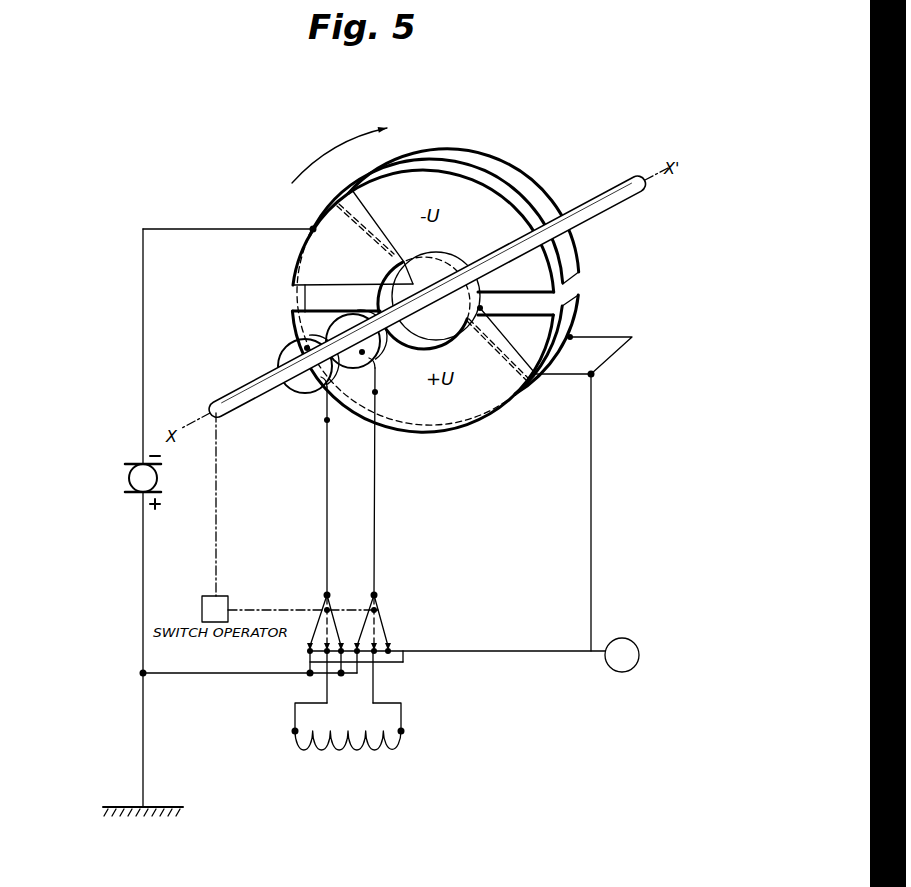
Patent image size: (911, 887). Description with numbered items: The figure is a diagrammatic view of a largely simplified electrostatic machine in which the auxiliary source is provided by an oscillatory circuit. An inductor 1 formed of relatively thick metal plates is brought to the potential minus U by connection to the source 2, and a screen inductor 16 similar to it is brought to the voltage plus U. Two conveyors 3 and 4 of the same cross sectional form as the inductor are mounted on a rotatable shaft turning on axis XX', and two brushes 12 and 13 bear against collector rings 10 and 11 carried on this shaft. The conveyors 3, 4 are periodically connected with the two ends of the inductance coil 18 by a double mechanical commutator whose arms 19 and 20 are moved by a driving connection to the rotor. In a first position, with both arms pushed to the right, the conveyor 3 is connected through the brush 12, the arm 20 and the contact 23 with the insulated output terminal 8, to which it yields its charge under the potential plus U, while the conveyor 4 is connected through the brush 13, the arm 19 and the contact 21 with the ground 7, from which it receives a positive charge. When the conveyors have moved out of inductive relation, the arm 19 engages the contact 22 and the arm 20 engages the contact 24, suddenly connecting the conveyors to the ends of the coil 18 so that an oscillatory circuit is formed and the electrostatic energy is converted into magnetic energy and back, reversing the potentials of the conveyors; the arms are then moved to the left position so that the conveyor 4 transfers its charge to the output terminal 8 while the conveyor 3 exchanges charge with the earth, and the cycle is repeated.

The inductor 1 is at (577, 257).
The source 2 is at (128, 481).
The conveyor 3 is at (567, 327).
The conveyor 4 is at (305, 298).
The ground 7 is at (143, 807).
The insulated output terminal 8 is at (637, 655).
The collector ring 10 is at (335, 325).
The collector ring 11 is at (280, 357).
The brush 12 is at (376, 394).
The brush 13 is at (327, 421).
The screen inductor 16 is at (543, 378).
The inductance coil 18 is at (345, 752).
The arm 19 is at (325, 608).
The arm 20 is at (380, 600).
The contact 21 is at (358, 646).
The contact 22 is at (311, 645).
The contact 23 is at (390, 649).
The contact 24 is at (375, 655).